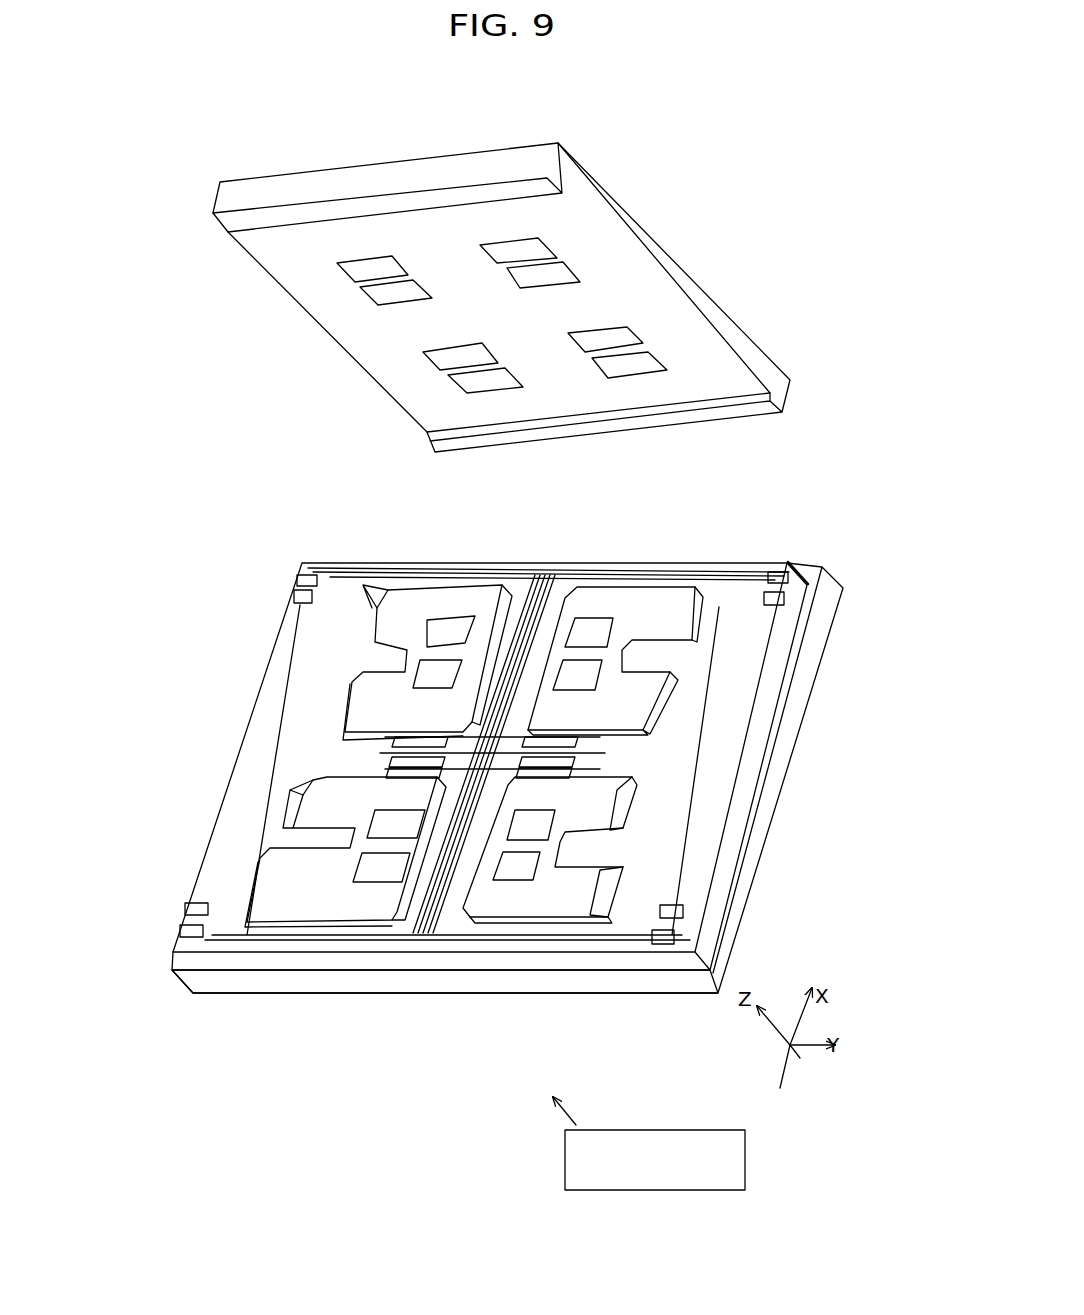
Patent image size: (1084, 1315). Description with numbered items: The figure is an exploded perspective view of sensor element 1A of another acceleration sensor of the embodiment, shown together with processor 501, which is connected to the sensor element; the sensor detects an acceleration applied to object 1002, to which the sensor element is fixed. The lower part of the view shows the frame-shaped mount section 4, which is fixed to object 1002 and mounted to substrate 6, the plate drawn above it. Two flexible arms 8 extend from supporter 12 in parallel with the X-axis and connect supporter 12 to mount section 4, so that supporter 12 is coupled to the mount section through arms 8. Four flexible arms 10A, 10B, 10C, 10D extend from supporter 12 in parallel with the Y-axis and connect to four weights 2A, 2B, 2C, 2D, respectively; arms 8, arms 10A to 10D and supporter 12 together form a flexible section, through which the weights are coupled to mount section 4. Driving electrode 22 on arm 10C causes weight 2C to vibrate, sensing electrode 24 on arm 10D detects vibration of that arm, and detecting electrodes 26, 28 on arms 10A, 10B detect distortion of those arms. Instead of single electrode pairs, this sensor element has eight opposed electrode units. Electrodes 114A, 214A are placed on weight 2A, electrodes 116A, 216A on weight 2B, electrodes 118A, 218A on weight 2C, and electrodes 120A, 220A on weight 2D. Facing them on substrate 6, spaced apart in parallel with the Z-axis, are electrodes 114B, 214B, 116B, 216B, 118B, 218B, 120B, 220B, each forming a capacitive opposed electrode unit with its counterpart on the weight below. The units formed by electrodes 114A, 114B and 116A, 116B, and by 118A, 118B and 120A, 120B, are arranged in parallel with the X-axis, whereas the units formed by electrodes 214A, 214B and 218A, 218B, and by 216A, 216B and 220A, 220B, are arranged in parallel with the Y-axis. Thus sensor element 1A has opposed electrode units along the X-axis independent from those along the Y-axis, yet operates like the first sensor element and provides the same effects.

The sensor element 1A is at (768, 172).
The substrate 6 is at (713, 352).
The electrode 214B is at (363, 273).
The electrode 114B is at (385, 295).
The electrode 116B is at (445, 360).
The electrode 216B is at (467, 378).
The electrode 218B is at (538, 253).
The electrode 118B is at (557, 277).
The electrode 120B is at (615, 340).
The electrode 220B is at (643, 363).
The mount section 4 is at (496, 570).
The object 1002 is at (427, 984).
The arm 8 is at (508, 640).
The supporter 12 is at (478, 800).
The detecting electrode 26 is at (397, 762).
The detecting electrode 28 is at (397, 746).
The driving electrode 22 is at (570, 765).
The sensing electrode 24 is at (567, 745).
The weight 2A is at (340, 908).
The weight 2B is at (405, 597).
The weight 2C is at (482, 905).
The weight 2D is at (597, 598).
The arm 10A is at (297, 805).
The arm 10B is at (335, 698).
The arm 10C is at (600, 850).
The arm 10D is at (652, 738).
The electrode 216A is at (440, 627).
The electrode 116A is at (423, 673).
The electrode 220A is at (597, 633).
The electrode 120A is at (587, 674).
The electrode 114A is at (380, 821).
The electrode 214A is at (367, 868).
The electrode 118A is at (533, 825).
The electrode 218A is at (520, 866).
The processor 501 is at (650, 1130).